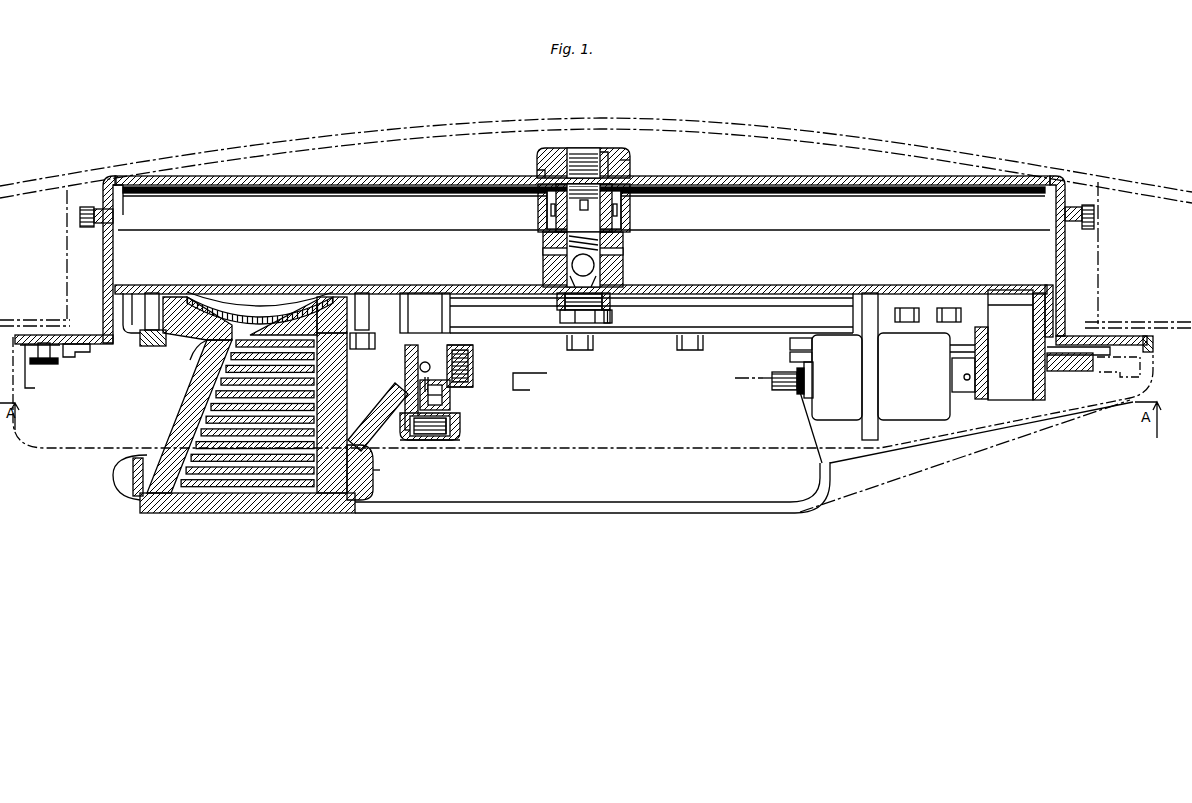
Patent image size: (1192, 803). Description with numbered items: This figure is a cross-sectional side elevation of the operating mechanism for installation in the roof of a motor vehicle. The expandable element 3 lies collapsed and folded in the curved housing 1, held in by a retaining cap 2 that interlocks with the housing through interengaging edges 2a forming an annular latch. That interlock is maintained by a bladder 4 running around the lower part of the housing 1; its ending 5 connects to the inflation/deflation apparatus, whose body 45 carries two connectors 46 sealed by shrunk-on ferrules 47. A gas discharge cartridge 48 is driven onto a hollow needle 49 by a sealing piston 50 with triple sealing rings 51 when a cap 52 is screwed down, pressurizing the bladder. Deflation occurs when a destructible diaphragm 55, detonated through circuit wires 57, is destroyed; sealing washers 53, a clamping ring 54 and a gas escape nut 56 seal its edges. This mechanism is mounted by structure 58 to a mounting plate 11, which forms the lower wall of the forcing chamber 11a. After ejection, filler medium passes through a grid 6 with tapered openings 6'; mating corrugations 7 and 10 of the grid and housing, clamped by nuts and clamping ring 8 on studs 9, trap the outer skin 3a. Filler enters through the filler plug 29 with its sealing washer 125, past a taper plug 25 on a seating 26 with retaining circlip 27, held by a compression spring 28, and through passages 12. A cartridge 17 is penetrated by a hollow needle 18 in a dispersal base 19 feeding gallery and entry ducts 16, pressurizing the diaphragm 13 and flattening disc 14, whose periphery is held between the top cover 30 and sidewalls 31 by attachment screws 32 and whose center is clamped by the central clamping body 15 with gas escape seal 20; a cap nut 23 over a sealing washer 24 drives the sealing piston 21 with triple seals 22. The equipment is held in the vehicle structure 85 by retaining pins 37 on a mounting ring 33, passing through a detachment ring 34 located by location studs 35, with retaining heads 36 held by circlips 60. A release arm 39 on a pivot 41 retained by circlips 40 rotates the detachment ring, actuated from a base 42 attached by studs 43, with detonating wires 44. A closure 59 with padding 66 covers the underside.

The housing 1 is at (114, 468).
The retaining cap 2 is at (145, 506).
The interengaging edges 2a is at (137, 448).
The expandable element 3 is at (240, 490).
The outer skin 3a is at (190, 348).
The bladder 4 is at (133, 484).
The ending of the bladder 5 is at (364, 424).
The grid 6 is at (197, 300).
The tapered openings 6' is at (260, 292).
The corrugations 7 is at (128, 292).
The nuts and clamping ring 8 is at (145, 340).
The studs 9 is at (152, 293).
The corrugations 10 is at (384, 293).
The mounting plate 11 is at (259, 287).
The forcing chamber 11a is at (745, 257).
The passages 12 is at (543, 252).
The diaphragm 13 is at (525, 190).
The flattening disc 14 is at (316, 194).
The central clamping body 15 is at (630, 178).
The gallery and entry ducts 16 is at (551, 212).
The cartridge 17 is at (545, 200).
The hollow needle 18 is at (590, 205).
The dispersal base 19 is at (617, 212).
The gas escape seal 20 is at (624, 200).
The sealing piston 21 is at (580, 150).
The triple seals 22 is at (602, 160).
The cap nut 23 is at (545, 162).
The sealing washer 24 is at (540, 175).
The taper plug 25 is at (602, 258).
The seating 26 is at (618, 271).
The retaining circlip 27 is at (560, 284).
The compression spring 28 is at (610, 240).
The filler plug 29 is at (562, 314).
The top cover 30 is at (400, 178).
The sidewalls 31 is at (104, 255).
The attachment screws 32 is at (88, 207).
The mounting ring 33 is at (1118, 332).
The detachment ring 34 is at (1146, 336).
The location studs 35 is at (85, 353).
The retaining heads 36 is at (60, 358).
The retaining pins 37 is at (45, 360).
The release arm 39 is at (1072, 368).
The circlips 40 is at (1045, 388).
The pivot 41 is at (988, 370).
The base 42 is at (920, 292).
The studs 43 is at (903, 325).
The wires 44 is at (760, 378).
The body 45 is at (405, 378).
The connectors 46 is at (402, 380).
The shrunk-on ferrules 47 is at (403, 420).
The gas discharge cartridge 48 is at (450, 420).
The hollow needle 49 is at (450, 400).
The sealing piston 50 is at (428, 438).
The triple sealing rings 51 is at (442, 436).
The cap 52 is at (455, 436).
The sealing washers 53 is at (450, 390).
The clamping ring 54 is at (473, 385).
The destructible diaphragm 55 is at (473, 362).
The gas escape nut 56 is at (473, 350).
The circuit wires 57 is at (478, 372).
The structure 58 is at (430, 292).
The closure 59 is at (36, 446).
The circlips 60 is at (30, 388).
The padding 66 is at (968, 455).
The vehicle structure 85 is at (66, 296).
The sealing washer 125 is at (612, 314).